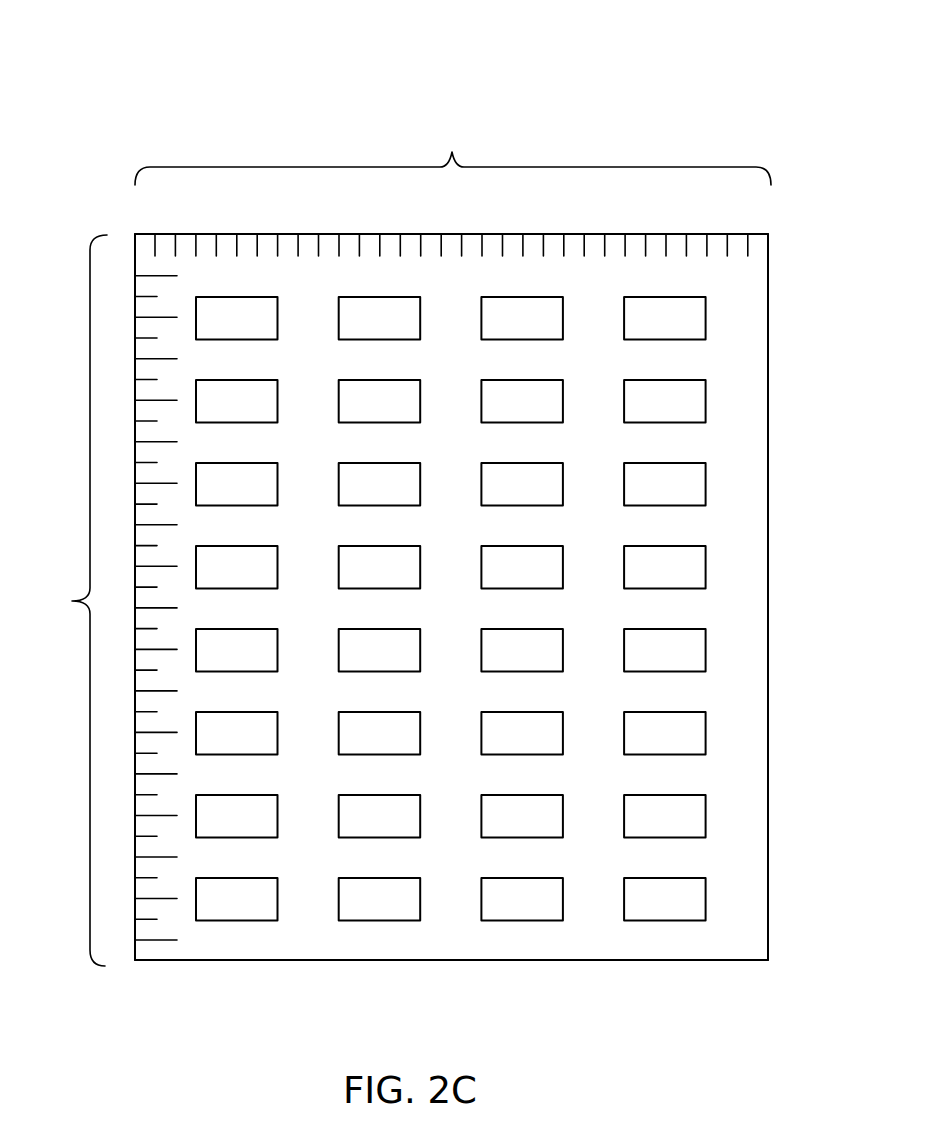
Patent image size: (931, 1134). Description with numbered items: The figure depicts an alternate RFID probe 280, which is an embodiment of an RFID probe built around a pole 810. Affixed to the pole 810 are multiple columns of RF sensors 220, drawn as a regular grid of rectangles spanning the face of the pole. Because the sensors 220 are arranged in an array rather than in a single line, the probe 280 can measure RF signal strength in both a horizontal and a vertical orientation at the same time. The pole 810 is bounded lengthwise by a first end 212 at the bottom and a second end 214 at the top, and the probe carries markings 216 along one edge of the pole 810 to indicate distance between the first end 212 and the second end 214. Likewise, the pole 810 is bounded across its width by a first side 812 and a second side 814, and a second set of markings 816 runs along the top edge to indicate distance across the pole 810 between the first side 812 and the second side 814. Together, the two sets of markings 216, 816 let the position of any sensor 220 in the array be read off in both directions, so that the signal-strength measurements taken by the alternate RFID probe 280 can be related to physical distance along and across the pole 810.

The alternate RFID probe 280 is at (218, 107).
The pole 810 is at (315, 951).
The first side 812 is at (133, 242).
The second side 814 is at (768, 277).
The markings 816 is at (453, 153).
The first end 212 is at (230, 961).
The second end 214 is at (290, 234).
The markings 216 is at (66, 600).
The RF sensors 220 is at (403, 498).